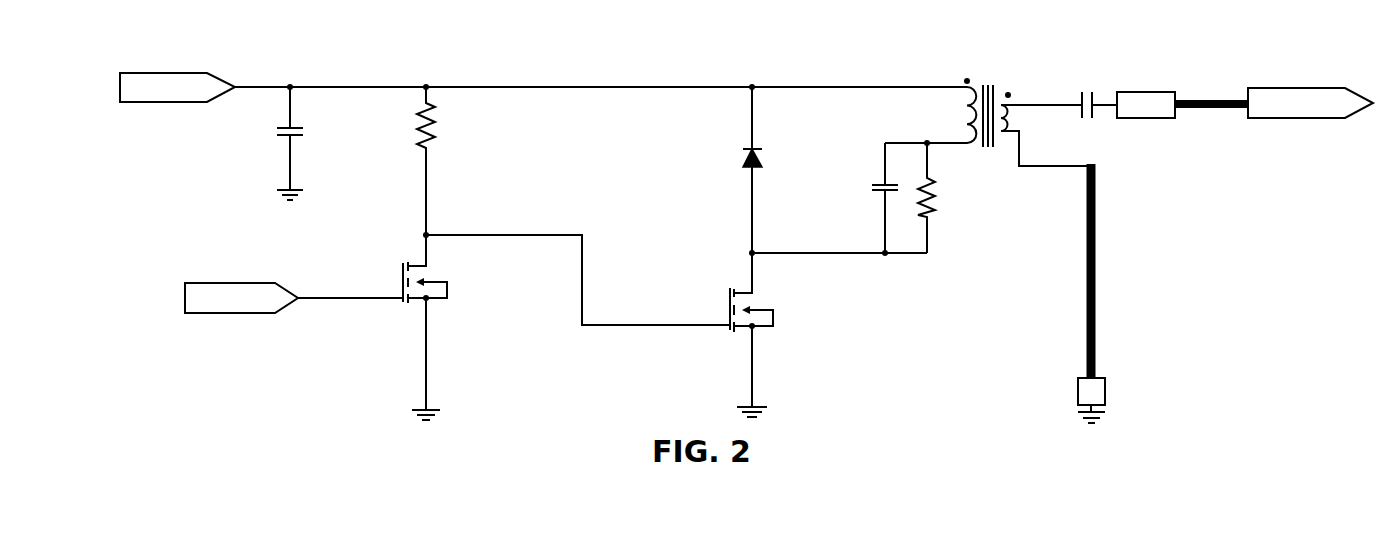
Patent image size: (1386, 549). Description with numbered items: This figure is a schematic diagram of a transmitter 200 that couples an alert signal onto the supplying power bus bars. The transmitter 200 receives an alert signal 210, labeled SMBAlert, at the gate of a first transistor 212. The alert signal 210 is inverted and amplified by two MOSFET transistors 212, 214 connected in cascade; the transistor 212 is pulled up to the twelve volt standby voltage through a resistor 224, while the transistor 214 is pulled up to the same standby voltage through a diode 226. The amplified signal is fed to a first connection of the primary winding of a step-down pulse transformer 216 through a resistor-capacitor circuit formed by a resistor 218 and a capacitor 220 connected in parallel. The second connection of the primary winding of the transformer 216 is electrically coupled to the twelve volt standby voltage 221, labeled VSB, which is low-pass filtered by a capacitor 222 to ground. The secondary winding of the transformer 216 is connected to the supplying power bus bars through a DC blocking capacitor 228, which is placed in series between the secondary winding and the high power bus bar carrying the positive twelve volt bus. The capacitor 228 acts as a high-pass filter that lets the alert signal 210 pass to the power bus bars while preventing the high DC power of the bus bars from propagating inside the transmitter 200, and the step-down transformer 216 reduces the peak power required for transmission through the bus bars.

The transmitter 200 is at (158, 46).
The 12 V standby voltage 221 is at (190, 102).
The capacitor 222 is at (294, 128).
The resistor 224 is at (432, 120).
The alert signal 210 is at (200, 284).
The transistor 212 is at (432, 282).
The transistor 214 is at (732, 300).
The diode 226 is at (743, 157).
The capacitor 220 is at (880, 193).
The resistor 218 is at (930, 212).
The step-down pulse transformer 216 is at (1001, 172).
The DC blocking capacitor 228 is at (1082, 100).